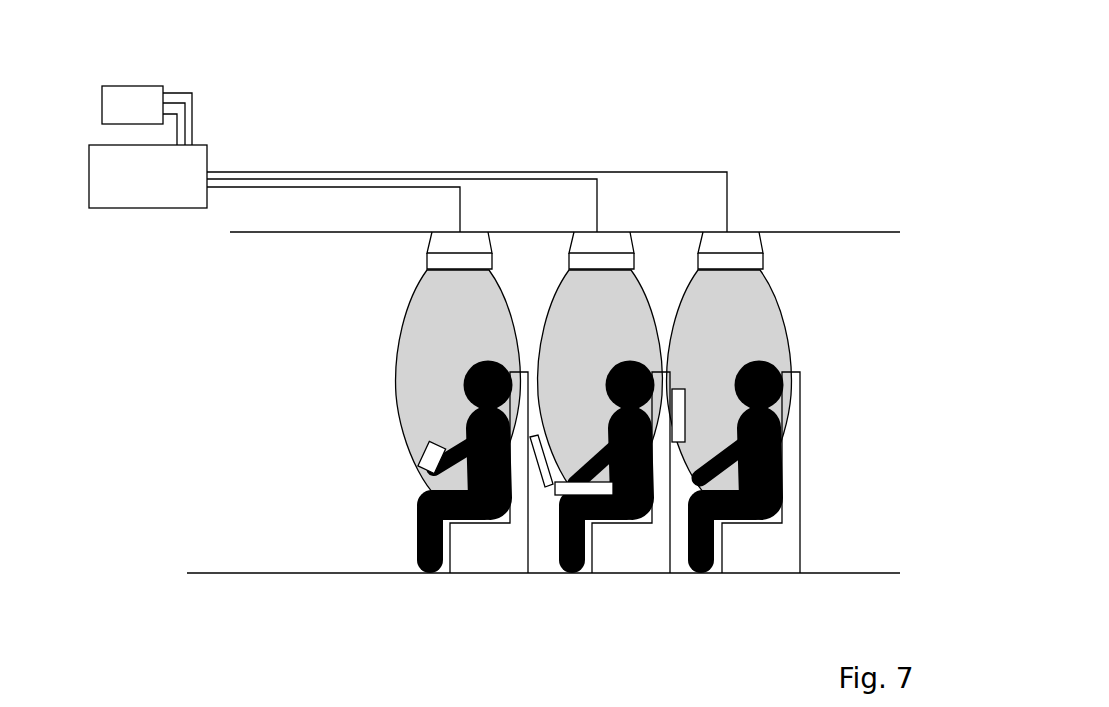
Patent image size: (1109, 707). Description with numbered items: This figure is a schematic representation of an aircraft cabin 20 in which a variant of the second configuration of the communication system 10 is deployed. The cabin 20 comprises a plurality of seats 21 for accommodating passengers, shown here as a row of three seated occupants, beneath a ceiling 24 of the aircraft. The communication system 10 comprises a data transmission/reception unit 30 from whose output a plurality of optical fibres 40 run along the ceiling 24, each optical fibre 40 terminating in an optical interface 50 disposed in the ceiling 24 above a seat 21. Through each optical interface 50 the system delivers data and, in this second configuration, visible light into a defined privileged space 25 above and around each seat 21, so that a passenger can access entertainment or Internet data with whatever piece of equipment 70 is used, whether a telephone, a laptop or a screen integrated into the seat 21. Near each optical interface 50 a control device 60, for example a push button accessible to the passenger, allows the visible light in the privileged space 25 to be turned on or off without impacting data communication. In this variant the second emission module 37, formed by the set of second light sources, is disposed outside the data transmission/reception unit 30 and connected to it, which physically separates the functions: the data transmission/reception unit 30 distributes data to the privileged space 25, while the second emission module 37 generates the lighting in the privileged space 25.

The communication system 10 is at (800, 51).
The aircraft cabin 20 is at (143, 527).
The seat 21 is at (483, 562).
The ceiling 24 is at (248, 233).
The privileged space 25 is at (417, 366).
The data transmission/reception unit 30 is at (132, 208).
The second emission module 37 is at (127, 86).
The optical fibre 40 is at (287, 186).
The optical interface 50 is at (445, 245).
The control device 60 is at (445, 262).
The piece of equipment 70 is at (422, 457).